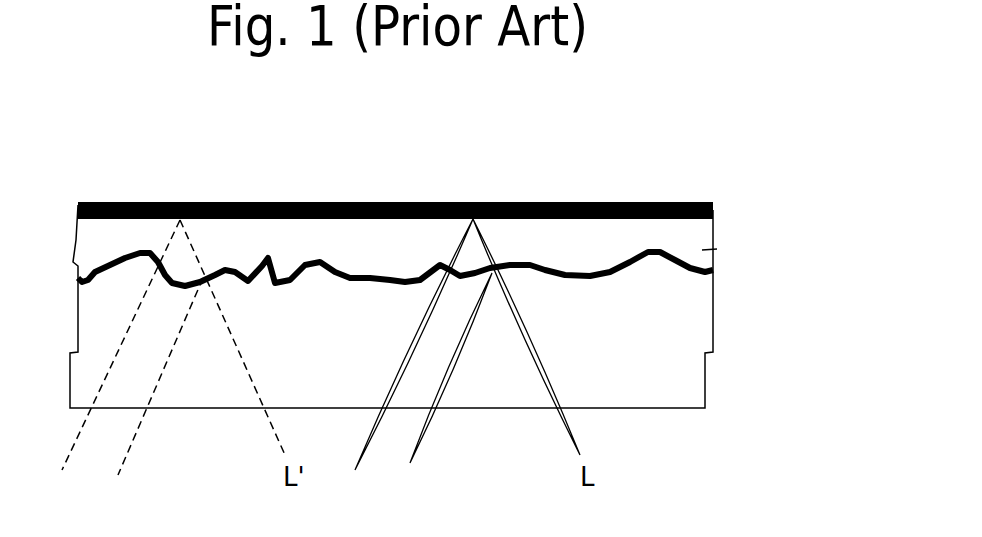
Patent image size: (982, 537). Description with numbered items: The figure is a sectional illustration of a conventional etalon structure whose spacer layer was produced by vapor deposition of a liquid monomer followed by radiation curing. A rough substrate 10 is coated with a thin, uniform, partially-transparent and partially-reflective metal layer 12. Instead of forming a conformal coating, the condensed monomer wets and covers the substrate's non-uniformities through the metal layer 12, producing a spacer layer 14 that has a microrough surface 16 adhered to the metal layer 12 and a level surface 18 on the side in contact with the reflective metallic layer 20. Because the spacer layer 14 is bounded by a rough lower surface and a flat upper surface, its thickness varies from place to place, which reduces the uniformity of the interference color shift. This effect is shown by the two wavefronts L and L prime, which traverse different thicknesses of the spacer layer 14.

The rough substrate 10 is at (677, 343).
The partially-transparent and partially-reflective metal layer 12 is at (712, 268).
The spacer layer 14 is at (717, 249).
The microrough surface 16 is at (537, 267).
The level surface 18 is at (377, 222).
The reflective metallic layer 20 is at (717, 210).